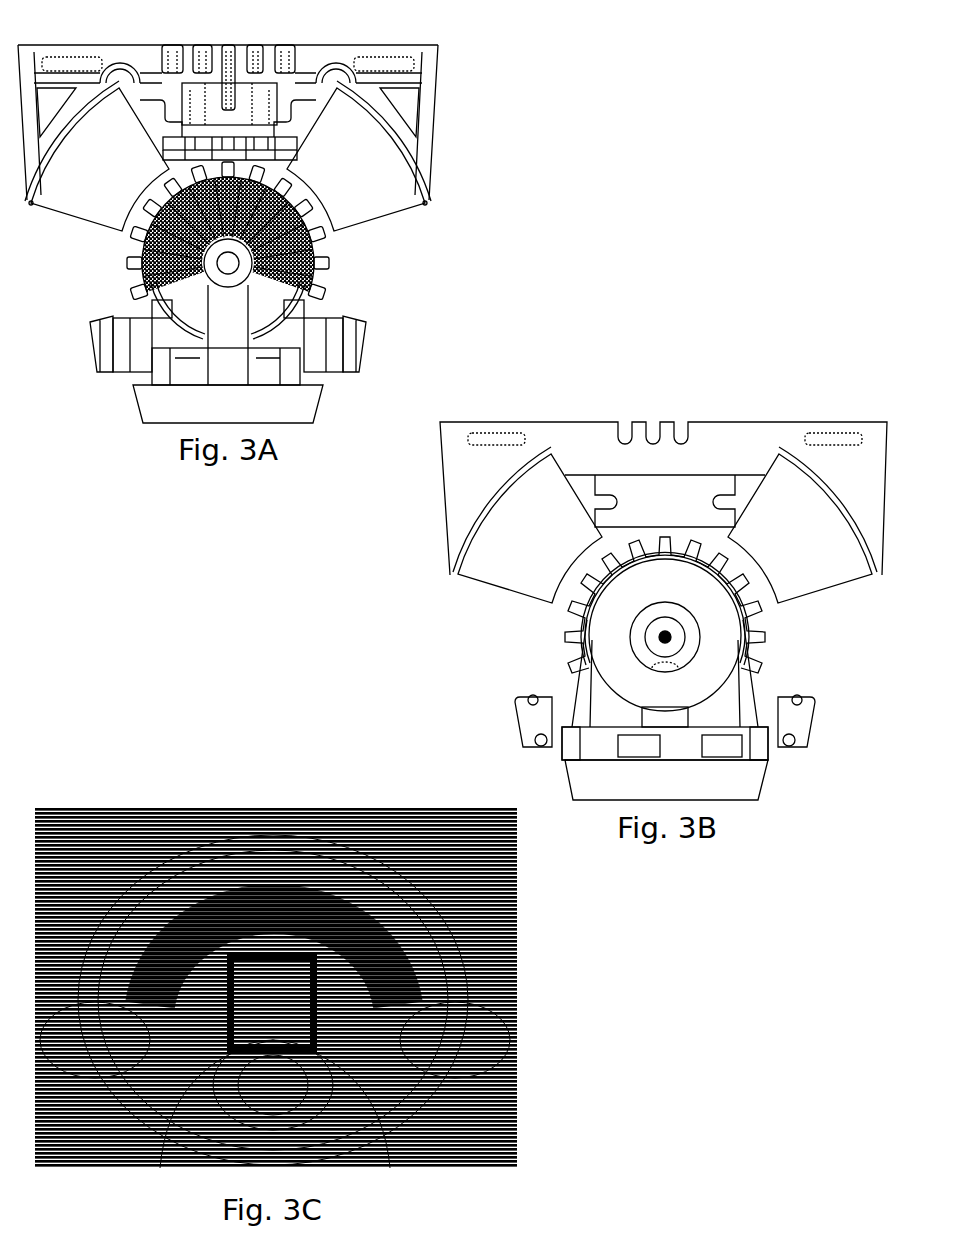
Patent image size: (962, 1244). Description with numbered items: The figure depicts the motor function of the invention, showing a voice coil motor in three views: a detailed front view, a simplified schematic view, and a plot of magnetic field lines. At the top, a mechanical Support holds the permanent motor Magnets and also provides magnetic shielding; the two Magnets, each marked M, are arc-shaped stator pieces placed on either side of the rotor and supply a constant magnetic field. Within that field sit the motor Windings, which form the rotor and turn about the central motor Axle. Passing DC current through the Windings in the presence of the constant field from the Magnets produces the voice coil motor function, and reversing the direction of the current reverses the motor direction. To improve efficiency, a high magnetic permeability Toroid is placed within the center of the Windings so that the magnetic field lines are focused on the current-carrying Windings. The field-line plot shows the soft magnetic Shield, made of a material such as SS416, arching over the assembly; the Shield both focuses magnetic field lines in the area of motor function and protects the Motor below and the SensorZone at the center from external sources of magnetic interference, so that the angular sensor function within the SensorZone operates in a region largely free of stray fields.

In FIG. 3A, the mechanical support for magnets and magnetic shielding Support is at (595, 81).
In FIG. 3B, the mechanical support for magnets and magnetic shielding Support is at (663, 498).
In FIG. 3A, the motor magnets Magnets is at (93, 199).
In FIG. 3B, the magnet M is at (665, 528).
In FIG. 3C, the magnet M is at (275, 1040).
In FIG. 3A, the motor windings Windings is at (670, 230).
In FIG. 3B, the motor windings Windings is at (665, 605).
In FIG. 3A, the motor axle Axle is at (565, 262).
In FIG. 3B, the motor axle Axle is at (930, 637).
In FIG. 3A, the high magnetic permeability toroid Toroid is at (257, 317).
In FIG. 3B, the high magnetic permeability toroid Toroid is at (650, 689).
In FIG. 3C, the magnetic shield Shield is at (274, 945).
In FIG. 3C, the motor Motor is at (276, 1104).
In FIG. 3C, the sensor zone SensorZone is at (218, 965).